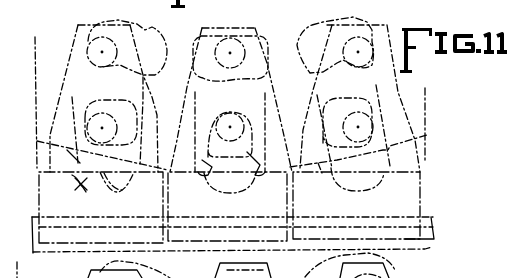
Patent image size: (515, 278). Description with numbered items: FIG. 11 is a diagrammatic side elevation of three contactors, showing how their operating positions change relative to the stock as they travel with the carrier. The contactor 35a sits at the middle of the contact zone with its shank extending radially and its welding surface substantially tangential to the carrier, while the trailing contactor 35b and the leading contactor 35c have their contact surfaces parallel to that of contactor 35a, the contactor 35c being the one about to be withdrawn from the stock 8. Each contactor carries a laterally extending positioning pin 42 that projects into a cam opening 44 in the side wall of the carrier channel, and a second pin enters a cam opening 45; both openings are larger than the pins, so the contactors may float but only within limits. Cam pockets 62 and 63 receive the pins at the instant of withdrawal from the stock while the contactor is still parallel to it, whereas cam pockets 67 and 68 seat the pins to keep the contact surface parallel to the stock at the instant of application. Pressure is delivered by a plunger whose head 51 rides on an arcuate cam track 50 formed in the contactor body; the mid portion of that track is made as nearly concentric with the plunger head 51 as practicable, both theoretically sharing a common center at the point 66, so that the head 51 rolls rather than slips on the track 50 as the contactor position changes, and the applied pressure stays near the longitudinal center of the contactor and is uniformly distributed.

The rail 8 is at (430, 215).
The contactor 35a is at (210, 243).
The trailing contactor 35b is at (60, 243).
The leading contactor 35c is at (435, 233).
The positioning pin 42 is at (118, 52).
The cam opening 44 is at (152, 30).
The cam opening 45 is at (112, 102).
The cam track 50 is at (128, 177).
The plunger head 51 is at (83, 192).
The cam pocket 62 is at (148, 77).
The cam pocket 63 is at (254, 175).
The common center point 66 is at (125, 189).
The cam pocket 67 is at (200, 78).
The cam pocket 68 is at (200, 180).